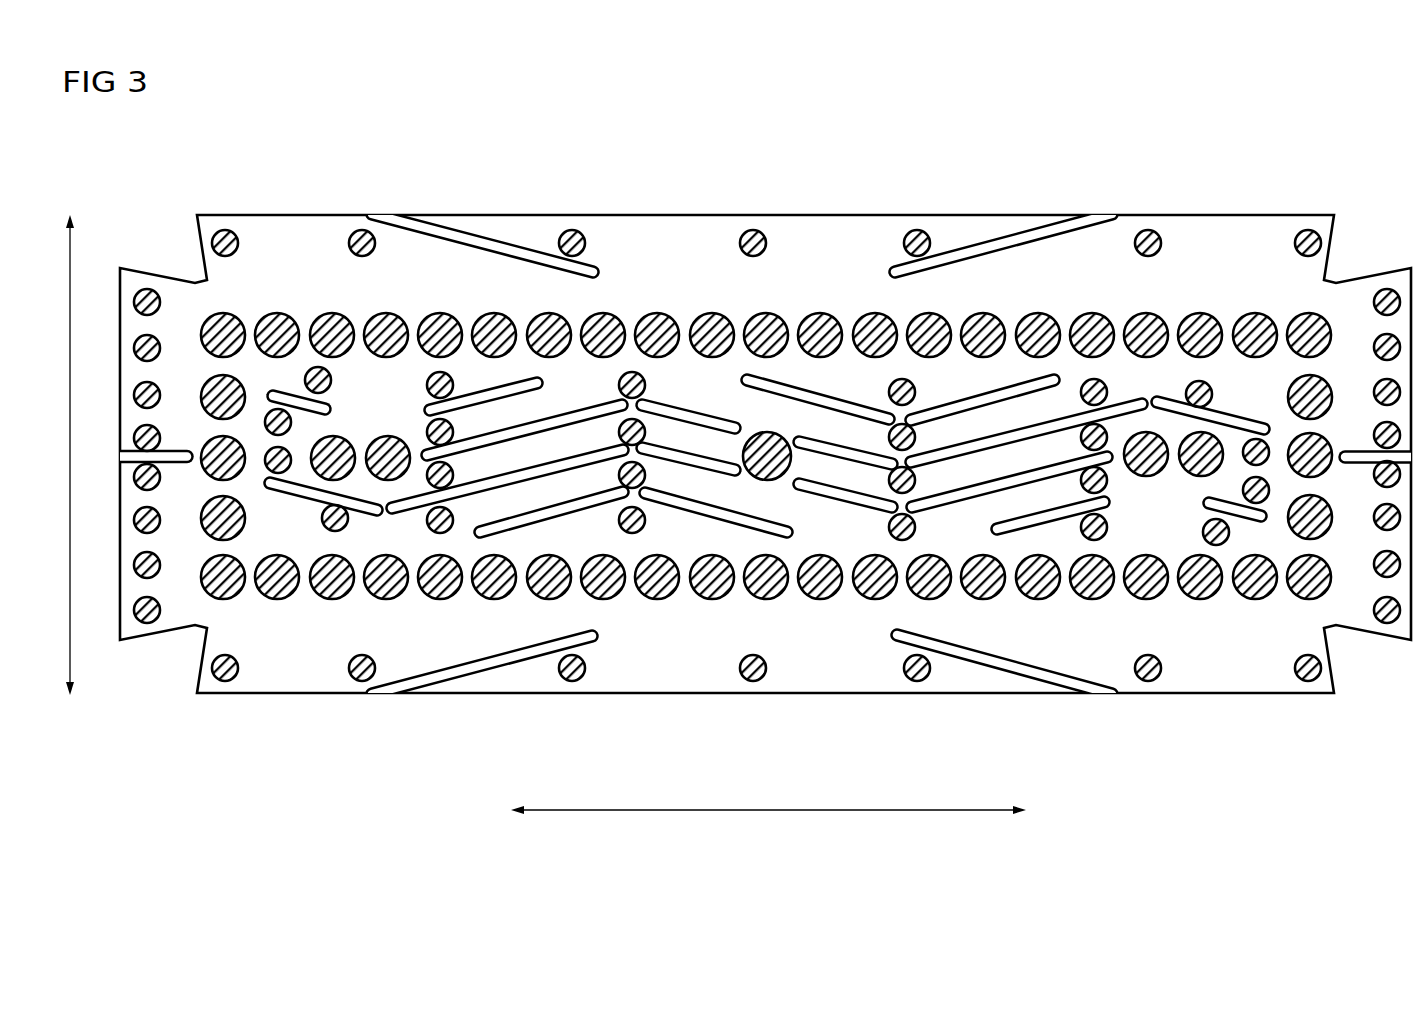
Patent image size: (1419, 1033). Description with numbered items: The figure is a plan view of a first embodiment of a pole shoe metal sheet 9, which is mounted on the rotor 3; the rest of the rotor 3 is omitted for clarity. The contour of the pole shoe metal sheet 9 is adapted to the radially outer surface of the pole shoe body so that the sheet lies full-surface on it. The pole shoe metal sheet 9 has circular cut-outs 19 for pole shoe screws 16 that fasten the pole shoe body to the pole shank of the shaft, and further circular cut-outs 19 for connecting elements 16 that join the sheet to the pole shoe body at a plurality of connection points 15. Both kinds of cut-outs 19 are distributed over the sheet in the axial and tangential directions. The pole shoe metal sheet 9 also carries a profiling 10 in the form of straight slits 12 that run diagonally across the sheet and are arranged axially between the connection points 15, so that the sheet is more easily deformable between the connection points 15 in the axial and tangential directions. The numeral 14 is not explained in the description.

The rotor 3 is at (1300, 151).
The pole shoe metal sheet 9 is at (674, 252).
The profiling 10 is at (762, 462).
The slits 12 is at (998, 240).
The tube openings 14 is at (278, 330).
The connection points 15 is at (776, 460).
The pole shoe screws / connecting elements 16 is at (226, 232).
The cut-outs 19 is at (280, 598).